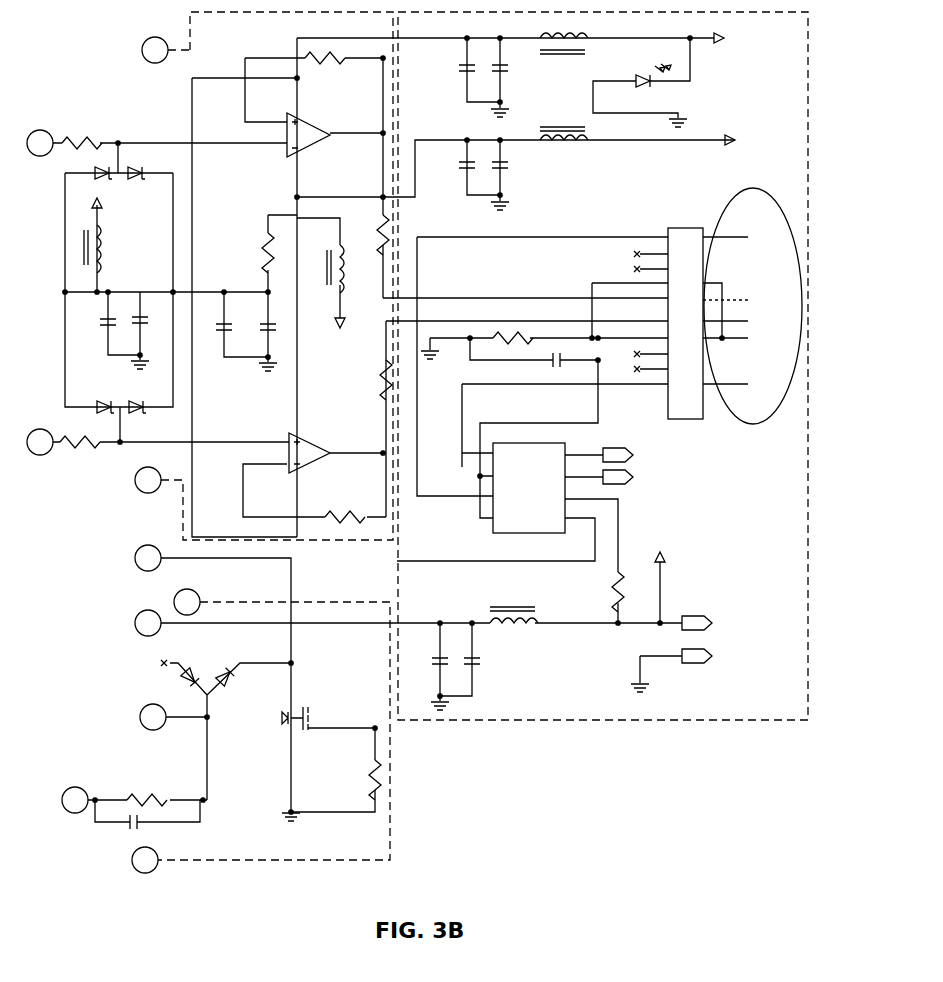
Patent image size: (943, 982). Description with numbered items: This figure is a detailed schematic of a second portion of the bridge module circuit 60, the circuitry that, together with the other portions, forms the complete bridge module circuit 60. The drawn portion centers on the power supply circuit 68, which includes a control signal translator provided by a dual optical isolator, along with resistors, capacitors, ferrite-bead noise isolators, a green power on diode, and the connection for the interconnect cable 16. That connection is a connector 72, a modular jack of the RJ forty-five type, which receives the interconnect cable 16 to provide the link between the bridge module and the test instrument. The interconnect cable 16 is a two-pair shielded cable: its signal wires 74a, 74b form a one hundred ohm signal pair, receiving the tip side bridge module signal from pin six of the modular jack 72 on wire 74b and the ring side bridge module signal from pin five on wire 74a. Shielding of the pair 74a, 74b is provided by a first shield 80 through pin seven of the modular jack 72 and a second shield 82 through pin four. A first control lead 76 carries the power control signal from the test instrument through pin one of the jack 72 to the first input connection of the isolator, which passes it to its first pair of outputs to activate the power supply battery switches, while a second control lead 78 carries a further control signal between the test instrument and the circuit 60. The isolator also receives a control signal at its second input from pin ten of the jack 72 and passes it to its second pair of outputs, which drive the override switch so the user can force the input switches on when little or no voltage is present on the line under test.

The interconnect cable 16 is at (740, 190).
The bridge module circuit 60 is at (515, 744).
The power supply circuit 68 is at (612, 722).
The connector 72 is at (672, 226).
The signal wire 74a is at (738, 323).
The signal wire 74b is at (738, 302).
The first control lead 76 is at (722, 386).
The second control lead 78 is at (732, 236).
The first shield 80 is at (712, 283).
The second shield 82 is at (705, 340).